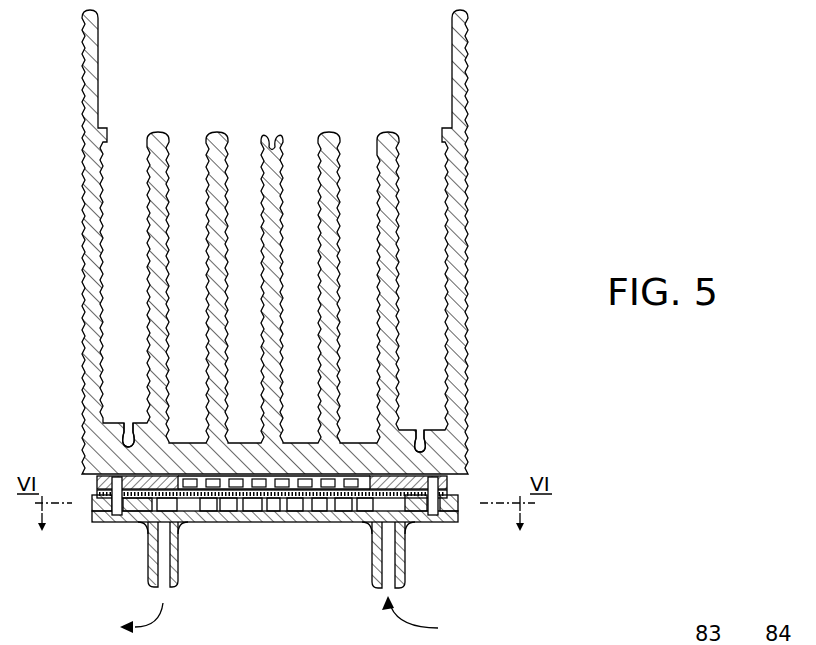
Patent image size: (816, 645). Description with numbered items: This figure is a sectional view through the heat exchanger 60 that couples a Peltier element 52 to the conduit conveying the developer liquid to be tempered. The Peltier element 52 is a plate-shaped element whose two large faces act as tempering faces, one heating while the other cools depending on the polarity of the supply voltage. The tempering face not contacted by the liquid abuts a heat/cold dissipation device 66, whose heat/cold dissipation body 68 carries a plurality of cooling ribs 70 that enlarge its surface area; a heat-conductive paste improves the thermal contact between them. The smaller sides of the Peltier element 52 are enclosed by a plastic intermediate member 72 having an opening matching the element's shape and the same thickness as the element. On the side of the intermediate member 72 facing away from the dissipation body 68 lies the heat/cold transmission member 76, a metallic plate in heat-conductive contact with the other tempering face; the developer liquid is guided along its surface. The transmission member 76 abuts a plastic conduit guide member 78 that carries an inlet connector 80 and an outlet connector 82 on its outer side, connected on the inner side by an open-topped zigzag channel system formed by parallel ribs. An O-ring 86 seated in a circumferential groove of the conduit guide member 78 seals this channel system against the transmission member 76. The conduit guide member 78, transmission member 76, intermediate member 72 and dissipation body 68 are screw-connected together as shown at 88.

The Peltier element 52 is at (406, 418).
The heat exchanger 60 is at (84, 532).
The heat/cold dissipation device 66 is at (491, 102).
The heat/cold dissipation body 68 is at (452, 440).
The cooling fins 70 is at (219, 134).
The intermediate member 72 is at (444, 468).
The heat/cold transmission member 76 is at (346, 511).
The conduit guide member 78 is at (262, 511).
The inlet connector 80 is at (406, 575).
The outlet connector 82 is at (147, 577).
The O-ring 86 is at (426, 503).
The screw connection 88 is at (117, 513).